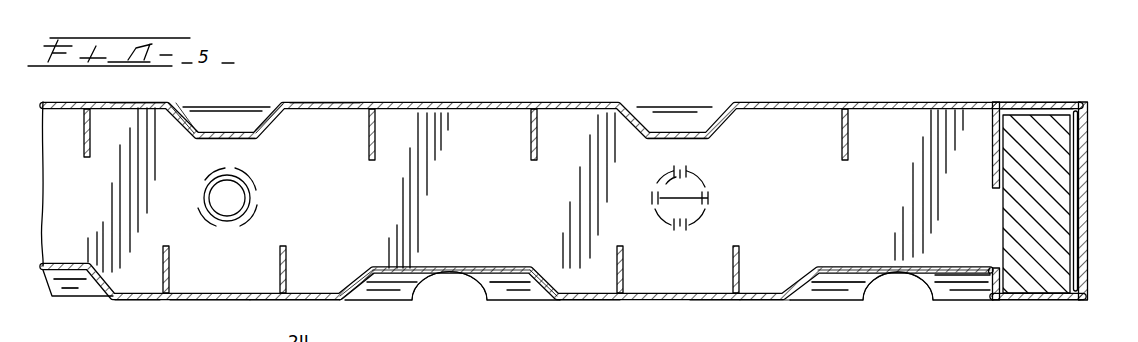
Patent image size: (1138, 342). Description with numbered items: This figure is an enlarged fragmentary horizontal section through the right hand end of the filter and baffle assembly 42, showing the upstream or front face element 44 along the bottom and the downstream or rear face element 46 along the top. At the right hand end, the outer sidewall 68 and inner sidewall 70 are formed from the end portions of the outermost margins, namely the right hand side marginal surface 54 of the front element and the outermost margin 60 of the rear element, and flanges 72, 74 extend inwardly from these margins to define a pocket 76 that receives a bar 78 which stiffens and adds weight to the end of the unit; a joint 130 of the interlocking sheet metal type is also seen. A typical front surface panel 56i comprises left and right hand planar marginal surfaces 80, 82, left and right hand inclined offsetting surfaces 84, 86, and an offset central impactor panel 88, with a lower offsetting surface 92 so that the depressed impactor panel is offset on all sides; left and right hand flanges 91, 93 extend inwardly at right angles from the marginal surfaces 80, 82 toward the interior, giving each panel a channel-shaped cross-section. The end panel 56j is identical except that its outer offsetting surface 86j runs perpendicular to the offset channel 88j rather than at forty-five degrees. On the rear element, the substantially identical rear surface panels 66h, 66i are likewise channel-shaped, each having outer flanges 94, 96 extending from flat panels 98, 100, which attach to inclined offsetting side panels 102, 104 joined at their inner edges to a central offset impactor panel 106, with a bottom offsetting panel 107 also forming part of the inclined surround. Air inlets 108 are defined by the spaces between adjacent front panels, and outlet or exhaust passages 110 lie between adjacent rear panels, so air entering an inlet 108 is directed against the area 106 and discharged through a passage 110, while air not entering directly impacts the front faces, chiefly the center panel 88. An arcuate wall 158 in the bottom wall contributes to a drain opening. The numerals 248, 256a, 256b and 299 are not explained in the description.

The filter and baffle assembly 42 is at (484, 303).
The upstream or front face element 44 is at (762, 312).
The downstream or rear face element 46 is at (556, 102).
The right hand side marginal surface 54 is at (1055, 302).
The front surface panel 56i is at (440, 302).
The front surface panel 56j is at (892, 300).
The outermost margin of rear element 60 is at (1022, 104).
The rear surface panel 66h is at (326, 99).
The rear surface panel 66i is at (668, 99).
The outer sidewall 68 is at (1088, 248).
The inner sidewall 70 is at (1077, 111).
The flange 72 is at (993, 270).
The flange 74 is at (992, 144).
The pocket 76 is at (994, 220).
The bar 78 is at (1046, 160).
The left hand planar marginal surface 80 is at (320, 327).
The right hand planar marginal surface 82 is at (590, 302).
The left hand inclined offsetting surface 84 is at (352, 290).
The right hand inclined offsetting surface 86 is at (550, 286).
The outer offsetting surface 86j is at (972, 287).
The central impactor panel 88 is at (412, 268).
The offset channel 88j is at (836, 268).
The left hand flange 91 is at (281, 266).
The lower offsetting surface 92 is at (520, 291).
The right hand flange 93 is at (625, 280).
The outer flange 94 is at (91, 158).
The outer flange 96 is at (377, 160).
The flat panel 98 is at (137, 102).
The flat panel 100 is at (329, 104).
The inclined offsetting side panel 102 is at (185, 128).
The inclined offsetting side panel 104 is at (292, 120).
The central offset impactor panel 106 is at (230, 141).
The bottom offsetting panel 107 is at (212, 124).
The air inlet 108 is at (192, 302).
The outlet or exhaust passage 110 is at (68, 117).
The joint 130 is at (716, 215).
The arcuate wall 158 is at (928, 286).
The bottom flange 248 is at (213, 341).
The flange lip 256a is at (28, 341).
The flange lip 256b is at (85, 341).
The ramp base 299 is at (350, 341).